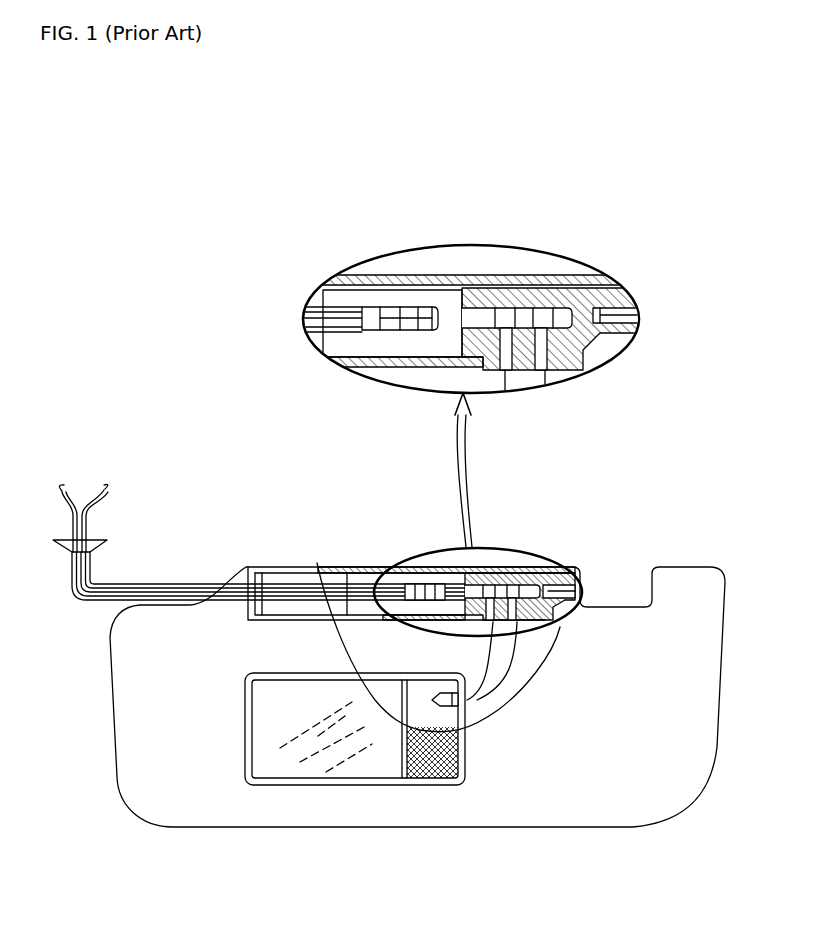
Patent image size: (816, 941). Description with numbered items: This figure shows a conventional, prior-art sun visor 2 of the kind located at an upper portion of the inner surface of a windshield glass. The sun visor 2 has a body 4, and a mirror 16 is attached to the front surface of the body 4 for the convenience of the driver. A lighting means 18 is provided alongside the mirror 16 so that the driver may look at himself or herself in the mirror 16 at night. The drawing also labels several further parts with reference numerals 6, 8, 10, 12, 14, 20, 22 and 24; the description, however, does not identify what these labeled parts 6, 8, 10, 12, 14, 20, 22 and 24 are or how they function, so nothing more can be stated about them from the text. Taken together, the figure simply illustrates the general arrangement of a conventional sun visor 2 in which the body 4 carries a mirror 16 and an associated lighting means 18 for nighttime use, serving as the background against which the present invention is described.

The sun visor 2 is at (240, 450).
The body 4 is at (575, 795).
The wire harness 6 is at (147, 593).
The plug 8 is at (403, 290).
The connector 10 is at (392, 567).
The connector housing 12 is at (270, 563).
The connector body 14 is at (601, 277).
The mirror 16 is at (317, 763).
The lighting means 18 is at (443, 699).
The wire terminals 20 is at (73, 500).
The plug terminals 22 is at (410, 322).
The enlarged portion 24 is at (508, 246).